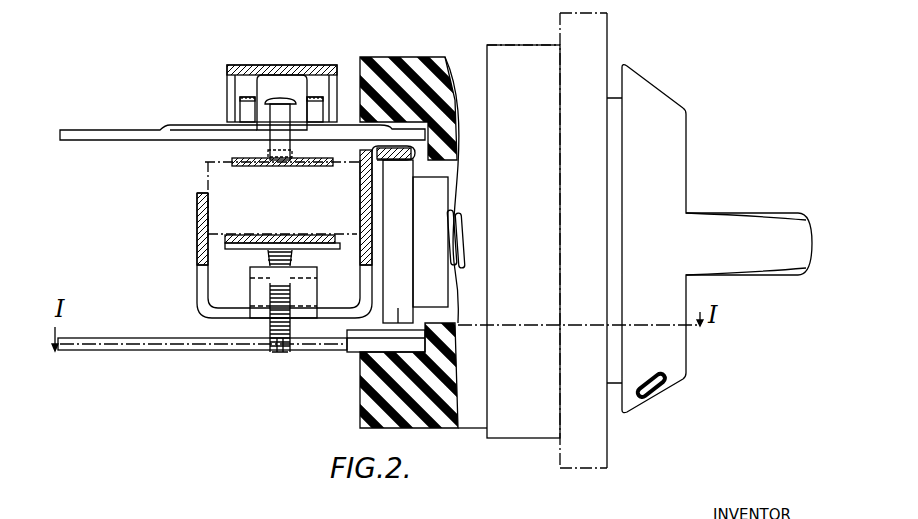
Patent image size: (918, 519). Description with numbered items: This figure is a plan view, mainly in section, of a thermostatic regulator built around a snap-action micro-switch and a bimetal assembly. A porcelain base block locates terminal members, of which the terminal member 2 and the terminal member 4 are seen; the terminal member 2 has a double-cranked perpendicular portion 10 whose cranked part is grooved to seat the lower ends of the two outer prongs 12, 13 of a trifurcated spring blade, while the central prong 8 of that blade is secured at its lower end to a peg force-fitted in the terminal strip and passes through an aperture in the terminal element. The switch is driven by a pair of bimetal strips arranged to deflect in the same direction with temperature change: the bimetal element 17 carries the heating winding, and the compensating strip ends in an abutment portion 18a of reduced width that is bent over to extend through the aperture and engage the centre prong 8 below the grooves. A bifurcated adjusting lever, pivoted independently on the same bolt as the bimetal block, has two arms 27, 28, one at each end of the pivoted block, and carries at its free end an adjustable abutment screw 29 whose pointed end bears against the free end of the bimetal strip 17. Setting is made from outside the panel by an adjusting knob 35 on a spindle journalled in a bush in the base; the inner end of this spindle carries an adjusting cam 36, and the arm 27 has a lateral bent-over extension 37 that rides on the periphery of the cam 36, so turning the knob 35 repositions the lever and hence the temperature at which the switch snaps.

The terminal member 2 is at (118, 130).
The terminal member 4 is at (148, 350).
The central prong 8 is at (284, 99).
The perpendicular portion 10 is at (322, 66).
The outer prong 12 is at (247, 97).
The outer prong 13 is at (317, 95).
The bimetal element 17 is at (305, 235).
The abutment portion 18a is at (282, 143).
The arm 27 is at (378, 232).
The arm 28 is at (282, 232).
The screw 29 is at (294, 352).
The adjusting knob 35 is at (728, 235).
The adjusting cam 36 is at (368, 368).
The lateral bent-over extension 37 is at (440, 127).